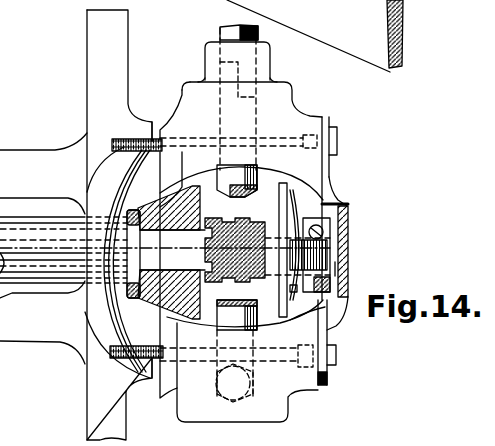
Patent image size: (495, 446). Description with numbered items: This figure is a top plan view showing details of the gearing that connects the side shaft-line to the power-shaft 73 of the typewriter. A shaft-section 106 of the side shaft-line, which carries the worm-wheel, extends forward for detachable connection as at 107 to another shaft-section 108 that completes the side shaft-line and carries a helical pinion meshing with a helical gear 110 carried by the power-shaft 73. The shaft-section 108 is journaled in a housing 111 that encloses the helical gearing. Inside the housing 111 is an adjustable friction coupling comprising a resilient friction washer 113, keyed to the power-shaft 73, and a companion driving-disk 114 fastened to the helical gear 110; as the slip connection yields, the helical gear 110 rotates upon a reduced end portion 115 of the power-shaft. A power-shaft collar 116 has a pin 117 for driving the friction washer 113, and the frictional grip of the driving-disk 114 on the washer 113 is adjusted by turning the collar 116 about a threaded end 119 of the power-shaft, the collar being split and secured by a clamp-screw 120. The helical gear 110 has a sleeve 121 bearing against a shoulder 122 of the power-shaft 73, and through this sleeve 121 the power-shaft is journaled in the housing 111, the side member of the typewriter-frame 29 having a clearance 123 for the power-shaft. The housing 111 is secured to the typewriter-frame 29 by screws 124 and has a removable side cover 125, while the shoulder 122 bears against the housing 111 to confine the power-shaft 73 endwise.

The typewriter-frame 29 is at (118, 225).
The power-shaft 73 is at (72, 217).
The shaft-section 106 is at (220, 35).
The detachable connection 107 is at (252, 74).
The shaft-section 108 is at (237, 247).
The helical gear 110 is at (210, 272).
The housing 111 is at (162, 373).
The resilient friction washer 113 is at (300, 203).
The driving-disk 114 is at (283, 213).
The reduced end portion 115 is at (228, 222).
The power-shaft collar 116 is at (339, 215).
The pin 117 is at (290, 288).
The threaded end 119 is at (335, 270).
The clamp-screw 120 is at (323, 232).
The sleeve 121 is at (147, 290).
The shoulder 122 is at (180, 232).
The clearance 123 is at (86, 298).
The screws 124 is at (196, 140).
The removable side cover 125 is at (333, 317).